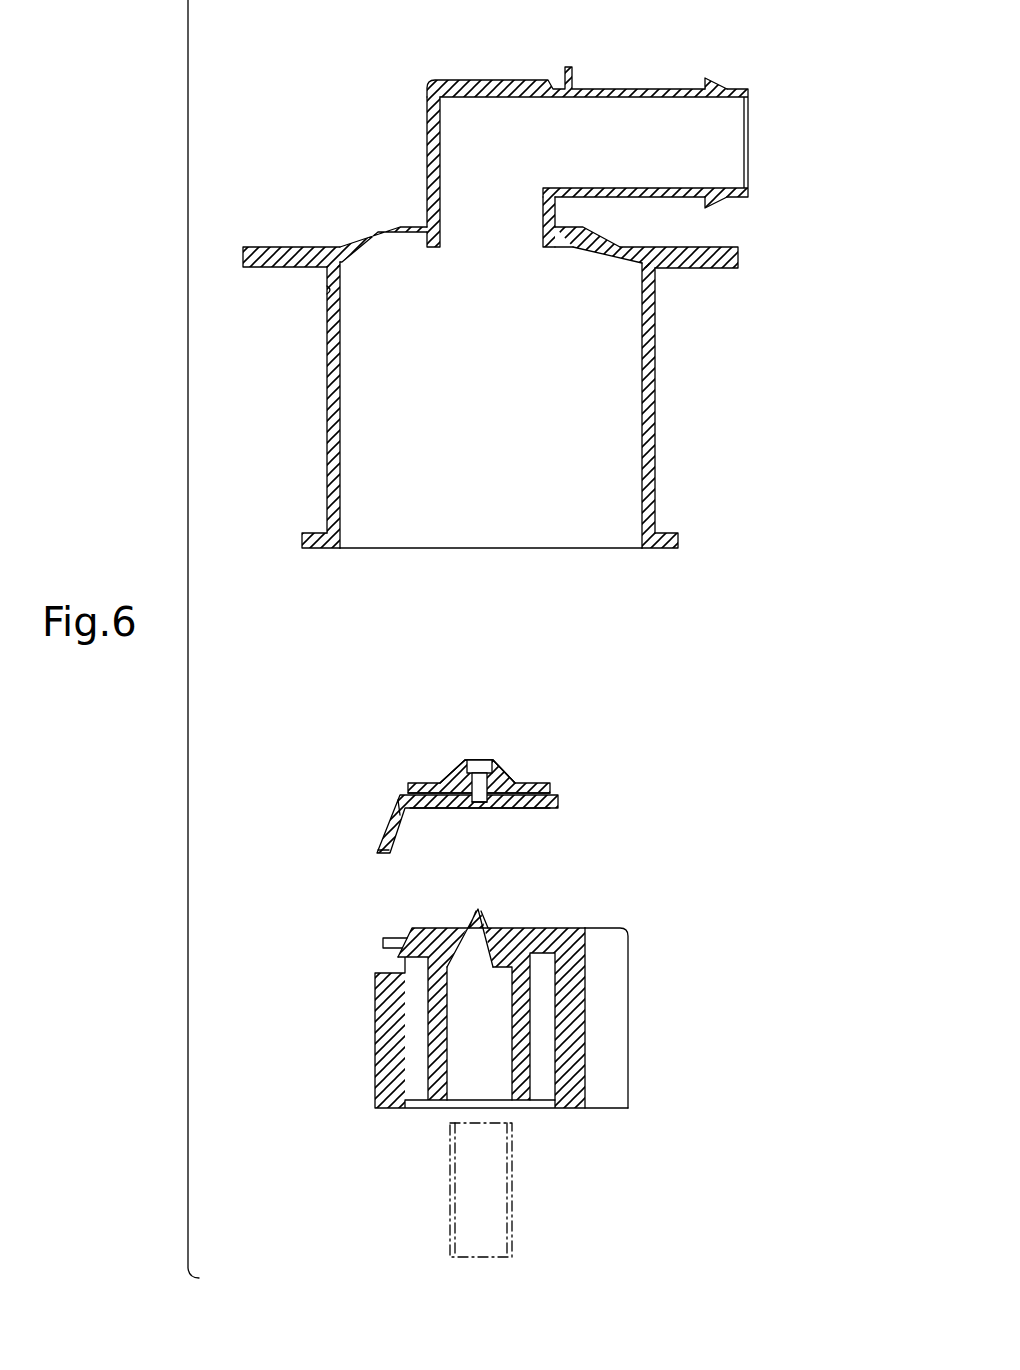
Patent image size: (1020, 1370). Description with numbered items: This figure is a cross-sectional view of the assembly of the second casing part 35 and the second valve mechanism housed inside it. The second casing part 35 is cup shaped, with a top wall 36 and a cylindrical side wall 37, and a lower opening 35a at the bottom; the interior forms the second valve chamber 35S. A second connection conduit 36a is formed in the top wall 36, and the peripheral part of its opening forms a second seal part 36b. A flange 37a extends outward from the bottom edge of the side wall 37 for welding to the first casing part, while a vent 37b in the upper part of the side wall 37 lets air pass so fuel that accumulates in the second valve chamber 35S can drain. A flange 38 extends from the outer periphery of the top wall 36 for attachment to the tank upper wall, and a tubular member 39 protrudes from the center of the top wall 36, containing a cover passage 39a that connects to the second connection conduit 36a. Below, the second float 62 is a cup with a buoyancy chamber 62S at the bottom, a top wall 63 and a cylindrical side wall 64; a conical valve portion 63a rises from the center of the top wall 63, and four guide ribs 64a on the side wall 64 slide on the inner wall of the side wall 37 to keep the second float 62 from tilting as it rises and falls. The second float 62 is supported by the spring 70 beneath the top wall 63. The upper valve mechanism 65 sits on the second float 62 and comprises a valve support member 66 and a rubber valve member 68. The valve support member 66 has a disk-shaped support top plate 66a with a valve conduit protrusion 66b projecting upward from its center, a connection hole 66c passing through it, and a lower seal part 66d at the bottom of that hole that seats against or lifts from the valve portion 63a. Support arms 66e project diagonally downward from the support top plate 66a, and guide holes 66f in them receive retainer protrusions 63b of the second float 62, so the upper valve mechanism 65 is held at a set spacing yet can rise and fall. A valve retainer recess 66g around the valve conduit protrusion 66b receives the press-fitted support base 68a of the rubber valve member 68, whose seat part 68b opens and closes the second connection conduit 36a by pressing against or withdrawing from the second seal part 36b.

The second casing part 35 is at (530, 311).
The lower opening 35a is at (456, 550).
The second valve chamber 35S is at (545, 515).
The top wall 36 is at (377, 237).
The second connection conduit 36a is at (473, 237).
The second seal part 36b is at (543, 262).
The side wall 37 is at (655, 372).
The flange 37a is at (676, 534).
The vent 37b is at (330, 290).
The flange 38 is at (725, 245).
The tubular member 39 is at (627, 88).
The cover passage 39a is at (662, 127).
The second float 62 is at (505, 1030).
The buoyancy chamber 62S is at (456, 1077).
The top wall 63 is at (461, 923).
The valve portion 63a is at (483, 918).
The retainer protrusions 63b is at (383, 945).
The side wall 64 is at (587, 998).
The guide ribs 64a is at (623, 1047).
The upper valve mechanism 65 is at (509, 742).
The valve support member 66 is at (486, 817).
The support top plate 66a is at (528, 810).
The valve conduit protrusion 66b is at (463, 771).
The connection hole 66c is at (478, 780).
The lower seal part 66d is at (472, 807).
The support arms 66e is at (397, 810).
The guide holes 66f is at (387, 830).
The valve retainer recess 66g is at (507, 787).
The rubber valve member 68 is at (538, 747).
The support base 68a is at (520, 778).
The seat part 68b is at (548, 785).
The spring 70 is at (512, 1188).